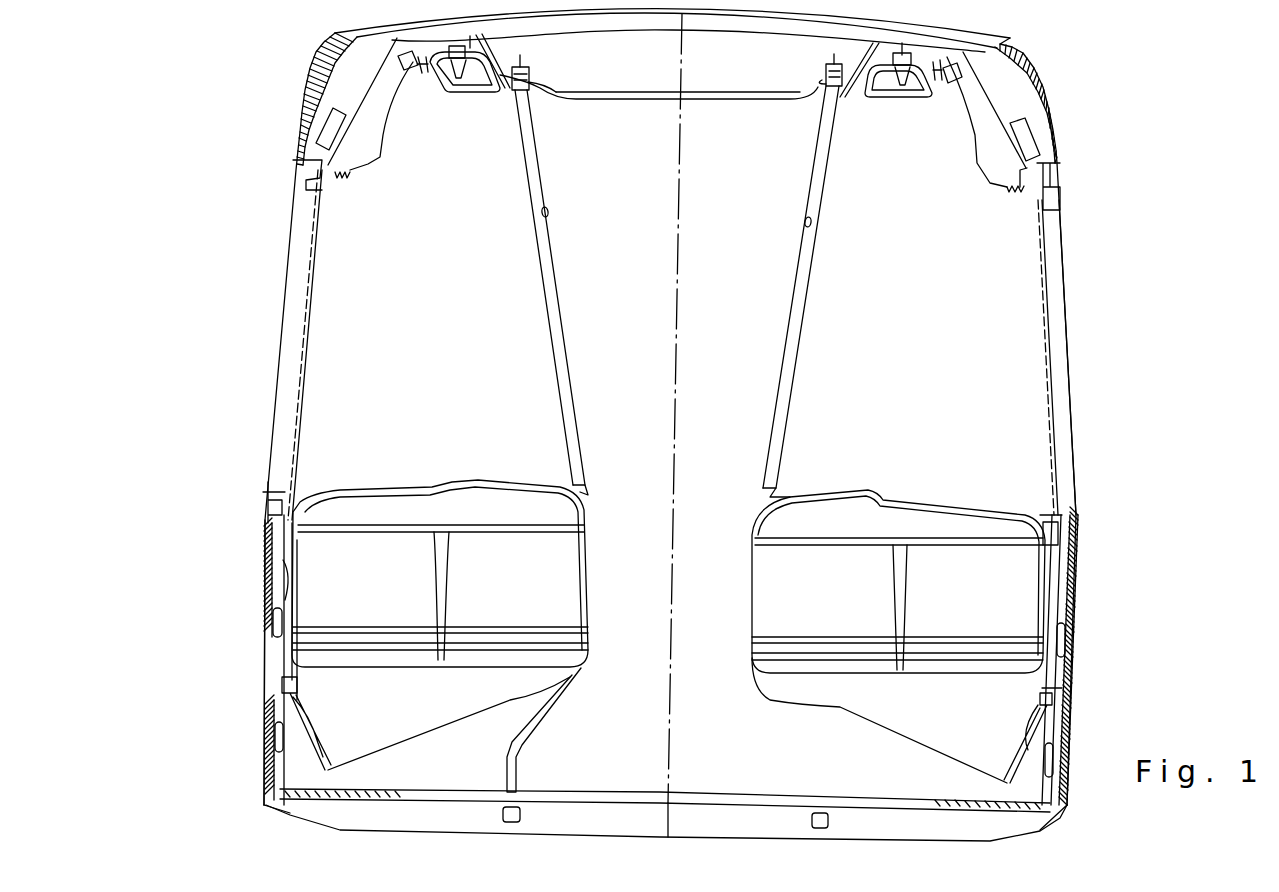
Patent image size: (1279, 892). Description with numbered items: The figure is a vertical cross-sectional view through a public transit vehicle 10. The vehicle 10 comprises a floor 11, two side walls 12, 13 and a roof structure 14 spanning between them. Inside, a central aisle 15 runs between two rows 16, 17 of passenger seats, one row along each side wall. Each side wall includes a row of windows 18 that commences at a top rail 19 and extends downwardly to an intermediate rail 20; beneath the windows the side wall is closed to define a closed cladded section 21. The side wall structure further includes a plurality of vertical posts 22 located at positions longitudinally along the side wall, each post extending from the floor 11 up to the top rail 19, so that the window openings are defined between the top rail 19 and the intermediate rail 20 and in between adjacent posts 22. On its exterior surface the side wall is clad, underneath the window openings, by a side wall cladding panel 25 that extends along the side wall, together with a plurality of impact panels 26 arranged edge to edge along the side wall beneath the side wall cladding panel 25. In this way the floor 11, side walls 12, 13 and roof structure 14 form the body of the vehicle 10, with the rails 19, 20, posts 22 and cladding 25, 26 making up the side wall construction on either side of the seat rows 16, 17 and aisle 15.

The vehicle 10 is at (1078, 238).
The floor 11 is at (608, 810).
The side wall 12 is at (309, 443).
The side wall 13 is at (1027, 362).
The roof structure 14 is at (634, 27).
The central aisle 15 is at (730, 641).
The row of passenger seats 16 is at (443, 482).
The row of passenger seats 17 is at (947, 489).
The windows 18 is at (293, 338).
The top rail 19 is at (330, 167).
The intermediate rail 20 is at (280, 535).
The closed cladded section 21 is at (1080, 690).
The vertical posts 22 is at (278, 592).
The side wall cladding panel 25 is at (268, 588).
The impact panels 26 is at (266, 741).